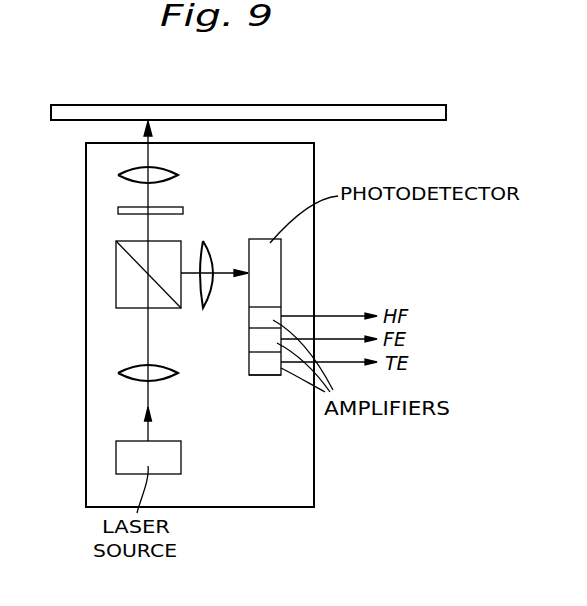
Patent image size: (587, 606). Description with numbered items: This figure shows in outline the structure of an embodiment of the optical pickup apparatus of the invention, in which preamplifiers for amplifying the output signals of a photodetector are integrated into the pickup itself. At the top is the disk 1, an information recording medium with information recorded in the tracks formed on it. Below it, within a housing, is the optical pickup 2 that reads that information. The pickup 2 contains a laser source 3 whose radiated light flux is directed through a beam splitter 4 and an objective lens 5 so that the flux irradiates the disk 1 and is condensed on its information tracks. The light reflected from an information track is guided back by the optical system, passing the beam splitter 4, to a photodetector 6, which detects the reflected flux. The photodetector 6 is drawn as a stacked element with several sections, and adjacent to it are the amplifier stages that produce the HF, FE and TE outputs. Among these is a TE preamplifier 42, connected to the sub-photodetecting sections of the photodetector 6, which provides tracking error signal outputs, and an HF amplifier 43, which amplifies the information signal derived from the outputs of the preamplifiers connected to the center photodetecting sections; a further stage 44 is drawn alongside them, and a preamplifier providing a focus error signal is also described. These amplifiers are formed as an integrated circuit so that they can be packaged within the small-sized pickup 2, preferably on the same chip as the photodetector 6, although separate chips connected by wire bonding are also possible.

The disk 1 is at (408, 108).
The optical pickup 2 is at (244, 508).
The laser source 3 is at (123, 462).
The beam splitter 4 is at (125, 277).
The objective lens 5 is at (118, 176).
The photodetector 6 is at (281, 248).
The TE preamplifier 42 is at (265, 376).
The HF amplifier 43 is at (249, 316).
The photodetector segment 44 is at (249, 343).